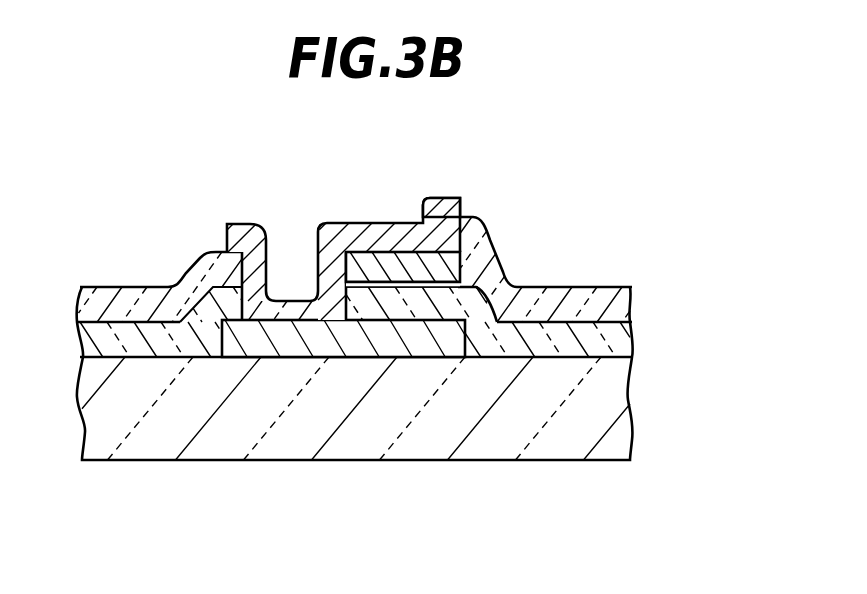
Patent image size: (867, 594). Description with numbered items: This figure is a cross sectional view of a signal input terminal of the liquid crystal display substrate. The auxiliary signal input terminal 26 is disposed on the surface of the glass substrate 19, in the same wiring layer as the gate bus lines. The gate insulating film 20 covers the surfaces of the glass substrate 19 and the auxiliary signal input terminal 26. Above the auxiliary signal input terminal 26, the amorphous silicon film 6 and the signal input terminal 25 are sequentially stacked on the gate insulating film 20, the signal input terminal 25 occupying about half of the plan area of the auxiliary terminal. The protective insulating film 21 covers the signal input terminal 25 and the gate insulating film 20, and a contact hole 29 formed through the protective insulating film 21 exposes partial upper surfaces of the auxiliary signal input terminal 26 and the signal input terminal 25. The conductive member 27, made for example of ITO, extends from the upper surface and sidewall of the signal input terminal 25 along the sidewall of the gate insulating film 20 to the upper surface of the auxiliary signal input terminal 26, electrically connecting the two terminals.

The glass substrate 19 is at (618, 407).
The gate insulating film 20 is at (618, 341).
The protective insulating film 21 is at (618, 306).
The signal input terminal 25 is at (463, 280).
The auxiliary signal input terminal 26 is at (354, 343).
The conductive member 27 is at (447, 215).
The contact hole 29 is at (258, 272).
The amorphous silicon film 6 is at (495, 282).